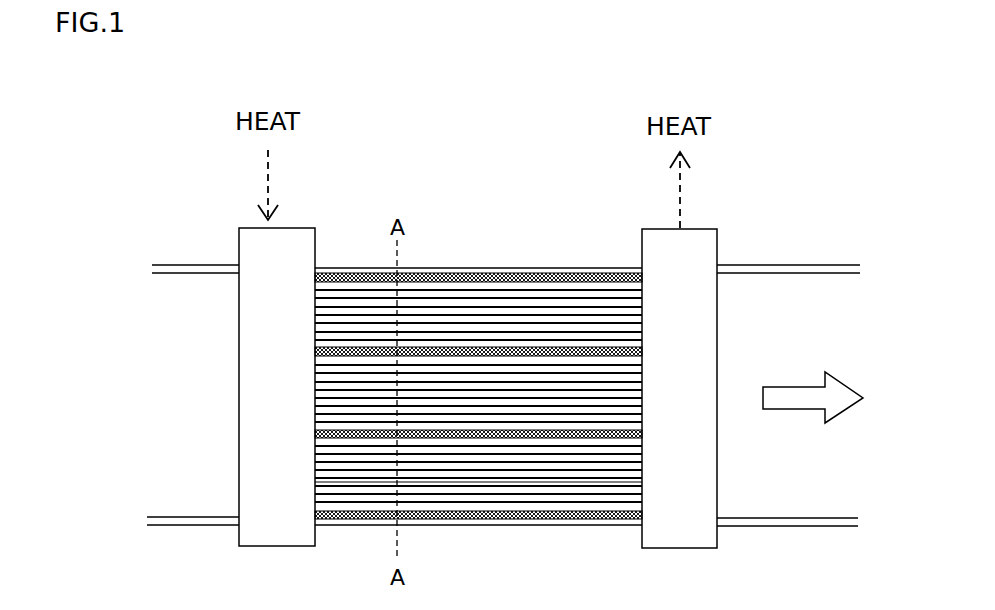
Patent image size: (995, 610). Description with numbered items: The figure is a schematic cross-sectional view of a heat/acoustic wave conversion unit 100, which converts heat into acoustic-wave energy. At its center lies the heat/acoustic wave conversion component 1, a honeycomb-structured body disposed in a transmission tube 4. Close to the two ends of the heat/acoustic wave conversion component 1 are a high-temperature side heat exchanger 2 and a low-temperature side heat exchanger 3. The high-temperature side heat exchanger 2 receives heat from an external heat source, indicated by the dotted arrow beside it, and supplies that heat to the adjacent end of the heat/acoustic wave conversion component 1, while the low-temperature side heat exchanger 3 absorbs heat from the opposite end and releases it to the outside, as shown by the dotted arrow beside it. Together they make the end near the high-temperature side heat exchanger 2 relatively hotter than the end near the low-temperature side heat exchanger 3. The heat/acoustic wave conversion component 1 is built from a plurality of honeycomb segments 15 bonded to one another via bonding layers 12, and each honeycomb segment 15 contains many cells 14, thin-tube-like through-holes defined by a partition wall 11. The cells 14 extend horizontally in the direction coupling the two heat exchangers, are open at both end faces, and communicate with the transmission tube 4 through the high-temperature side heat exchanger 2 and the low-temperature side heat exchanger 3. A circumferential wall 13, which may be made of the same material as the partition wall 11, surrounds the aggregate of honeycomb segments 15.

The heat/acoustic wave conversion unit 100 is at (533, 165).
The heat/acoustic wave conversion component 1 is at (425, 278).
The high-temperature side heat exchanger 2 is at (325, 243).
The low-temperature side heat exchanger 3 is at (638, 235).
The transmission tube 4 is at (175, 268).
The partition wall 11 is at (382, 494).
The bonding layer 12 is at (314, 351).
The circumferential wall 13 is at (476, 273).
The cell 14 is at (460, 482).
The honeycomb segment 15 is at (647, 283).